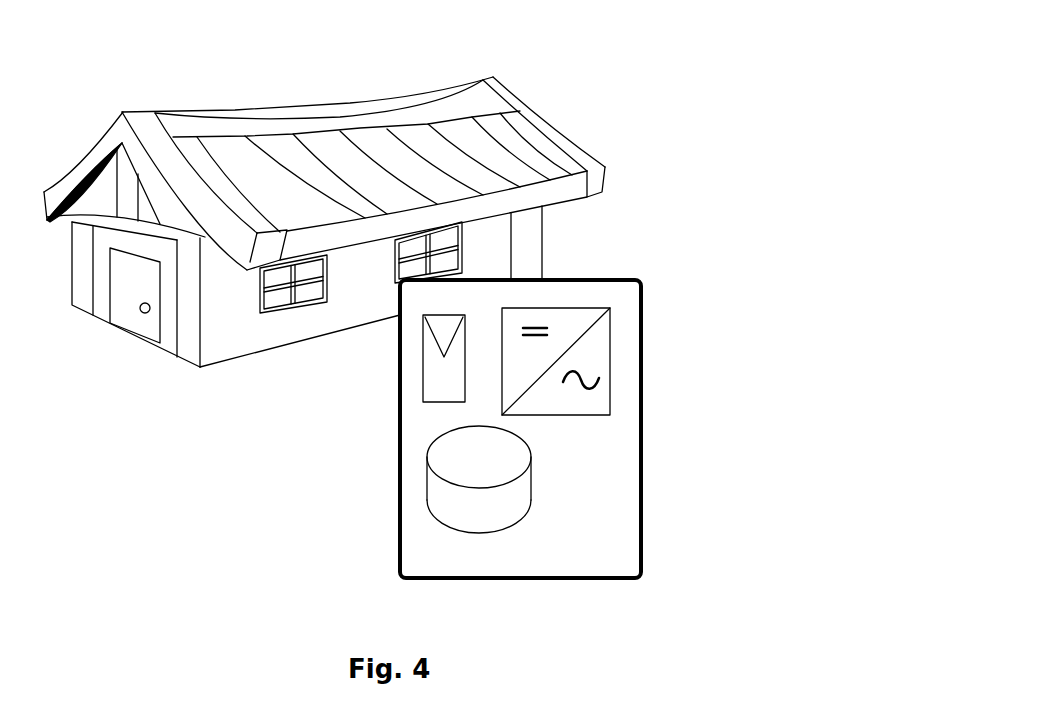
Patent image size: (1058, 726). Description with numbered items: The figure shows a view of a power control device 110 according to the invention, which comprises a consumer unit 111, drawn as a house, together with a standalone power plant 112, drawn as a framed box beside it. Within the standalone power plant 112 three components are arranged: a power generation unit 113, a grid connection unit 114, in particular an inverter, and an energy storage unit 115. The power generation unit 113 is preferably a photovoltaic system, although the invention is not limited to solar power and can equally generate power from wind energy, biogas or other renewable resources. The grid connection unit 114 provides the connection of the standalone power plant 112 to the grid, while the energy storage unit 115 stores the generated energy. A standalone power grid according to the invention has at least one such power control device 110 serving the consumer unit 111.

The energy system 110 is at (404, 313).
The consumer unit 111 is at (563, 110).
The standalone power plant 112 is at (525, 429).
The power generation unit 113 is at (423, 367).
The grid connection unit 114 is at (610, 338).
The energy storage unit 115 is at (532, 480).